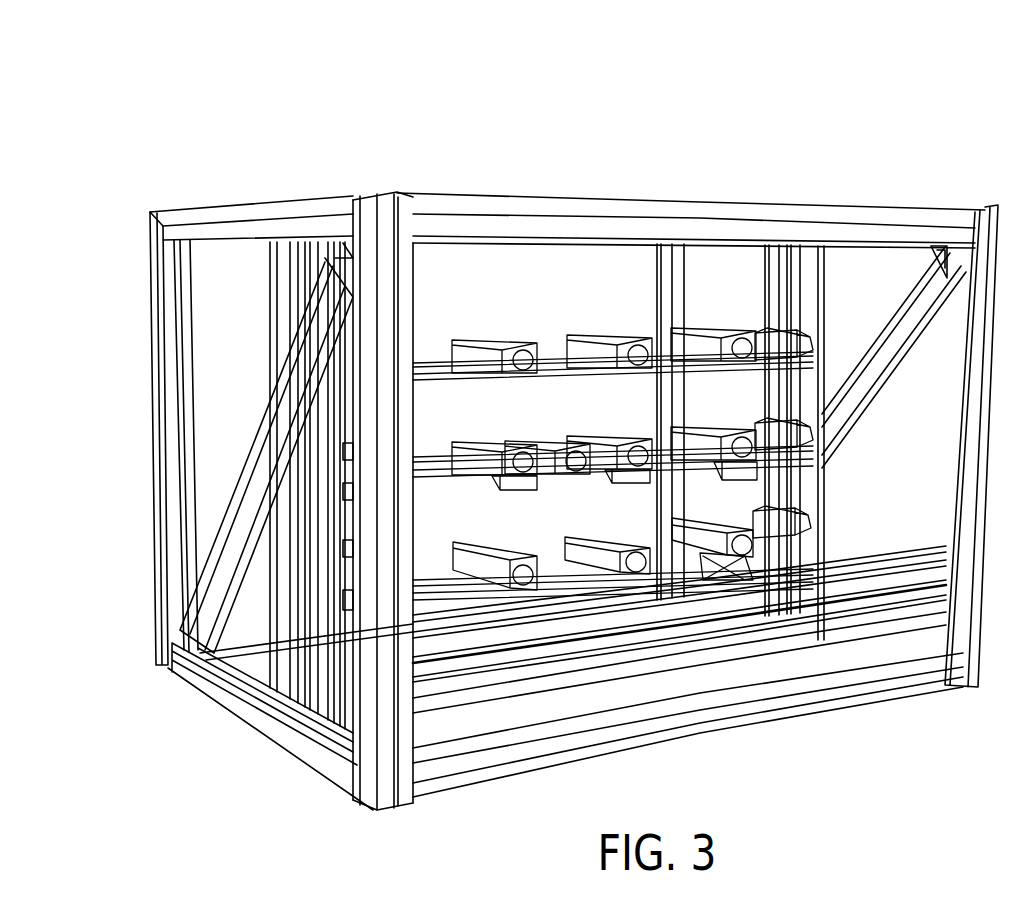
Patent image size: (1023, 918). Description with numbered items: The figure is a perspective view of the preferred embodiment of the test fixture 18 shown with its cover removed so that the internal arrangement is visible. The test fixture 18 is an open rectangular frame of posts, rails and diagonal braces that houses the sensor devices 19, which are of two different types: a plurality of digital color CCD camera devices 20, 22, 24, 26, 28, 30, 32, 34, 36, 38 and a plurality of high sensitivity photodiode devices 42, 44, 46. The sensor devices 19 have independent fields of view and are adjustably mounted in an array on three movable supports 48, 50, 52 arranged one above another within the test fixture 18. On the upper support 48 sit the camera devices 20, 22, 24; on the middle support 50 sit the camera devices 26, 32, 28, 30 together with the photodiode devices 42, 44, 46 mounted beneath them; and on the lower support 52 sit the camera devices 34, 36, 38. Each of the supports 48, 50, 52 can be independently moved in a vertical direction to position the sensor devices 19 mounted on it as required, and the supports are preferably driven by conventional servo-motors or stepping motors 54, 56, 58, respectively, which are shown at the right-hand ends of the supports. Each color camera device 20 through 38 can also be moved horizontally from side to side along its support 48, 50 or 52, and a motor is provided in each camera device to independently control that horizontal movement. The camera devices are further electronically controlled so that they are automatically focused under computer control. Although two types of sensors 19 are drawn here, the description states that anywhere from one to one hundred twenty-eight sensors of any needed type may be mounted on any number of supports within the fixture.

The test fixture 18 is at (642, 158).
The sensor devices 19 is at (737, 272).
The digital color CCD camera device 20 is at (480, 352).
The digital color CCD camera device 22 is at (598, 350).
The digital color CCD camera device 24 is at (706, 340).
The digital color CCD camera device 26 is at (470, 455).
The digital color CCD camera device 28 is at (600, 452).
The digital color CCD camera device 30 is at (707, 440).
The digital color CCD camera device 32 is at (528, 448).
The digital color CCD camera device 34 is at (478, 563).
The digital color CCD camera device 36 is at (585, 548).
The digital color CCD camera device 38 is at (675, 538).
The high sensitivity photodiode device 42 is at (528, 485).
The high sensitivity photodiode device 44 is at (623, 478).
The high sensitivity photodiode device 46 is at (758, 478).
The movable support 48 is at (431, 366).
The movable support 50 is at (428, 462).
The movable support 52 is at (430, 592).
The stepping motor 54 is at (787, 342).
The stepping motor 56 is at (797, 433).
The stepping motor 58 is at (800, 525).